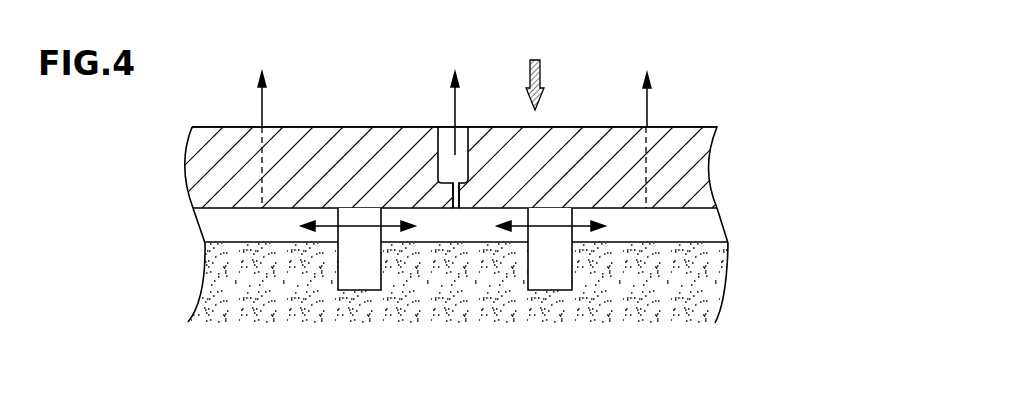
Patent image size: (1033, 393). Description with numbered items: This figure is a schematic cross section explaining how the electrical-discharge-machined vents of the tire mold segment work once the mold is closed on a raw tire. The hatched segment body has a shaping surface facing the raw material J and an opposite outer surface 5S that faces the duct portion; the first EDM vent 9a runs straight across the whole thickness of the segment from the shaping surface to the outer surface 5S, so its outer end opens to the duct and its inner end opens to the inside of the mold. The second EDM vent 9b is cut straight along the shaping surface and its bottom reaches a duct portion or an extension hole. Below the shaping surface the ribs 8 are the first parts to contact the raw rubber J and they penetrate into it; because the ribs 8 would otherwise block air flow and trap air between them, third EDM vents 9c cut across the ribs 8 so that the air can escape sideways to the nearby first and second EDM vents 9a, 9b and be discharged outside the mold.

The outer surface of the segment 5S is at (323, 127).
The second EDM vent 9b is at (455, 200).
The first EDM vent 9a is at (648, 176).
The third EDM vent 9c is at (362, 208).
The rib 8 is at (375, 292).
The raw material (rubber) J is at (668, 292).